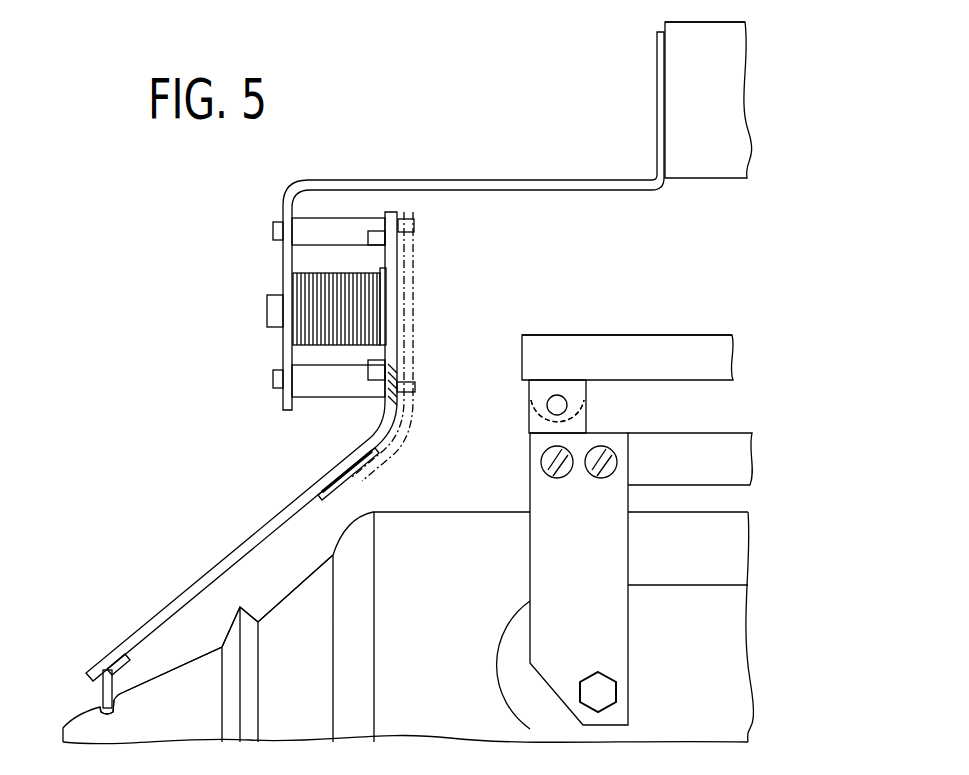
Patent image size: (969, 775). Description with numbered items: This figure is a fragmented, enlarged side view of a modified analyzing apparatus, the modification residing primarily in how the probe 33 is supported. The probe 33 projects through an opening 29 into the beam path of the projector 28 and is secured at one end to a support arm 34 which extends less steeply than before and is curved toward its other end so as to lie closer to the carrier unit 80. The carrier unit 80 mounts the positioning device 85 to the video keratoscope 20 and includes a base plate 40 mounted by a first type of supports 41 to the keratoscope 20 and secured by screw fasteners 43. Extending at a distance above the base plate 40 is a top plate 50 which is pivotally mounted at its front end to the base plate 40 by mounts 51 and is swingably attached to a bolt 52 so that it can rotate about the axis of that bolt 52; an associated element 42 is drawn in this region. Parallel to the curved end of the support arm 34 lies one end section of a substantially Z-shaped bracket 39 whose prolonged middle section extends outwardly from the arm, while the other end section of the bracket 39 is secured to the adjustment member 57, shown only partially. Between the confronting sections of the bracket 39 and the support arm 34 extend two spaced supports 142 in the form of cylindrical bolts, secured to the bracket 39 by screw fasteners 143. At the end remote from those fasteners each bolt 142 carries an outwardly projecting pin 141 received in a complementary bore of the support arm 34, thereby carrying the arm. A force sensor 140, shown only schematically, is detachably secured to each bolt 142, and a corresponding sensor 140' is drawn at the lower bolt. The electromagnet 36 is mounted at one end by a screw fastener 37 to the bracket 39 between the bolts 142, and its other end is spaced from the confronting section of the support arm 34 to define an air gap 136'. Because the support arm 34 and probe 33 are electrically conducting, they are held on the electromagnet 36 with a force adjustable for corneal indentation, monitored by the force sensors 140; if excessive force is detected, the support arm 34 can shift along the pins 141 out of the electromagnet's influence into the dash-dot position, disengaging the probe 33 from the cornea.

The video keratoscope 20 is at (758, 676).
The projector 28 is at (190, 680).
The opening 29 is at (100, 707).
The probe 33 is at (113, 686).
The support arm 34 is at (356, 476).
The electromagnet 36 is at (320, 325).
The screw fastener 37 is at (273, 312).
The bracket 39 is at (465, 185).
The base plate 40 is at (728, 452).
The first type of supports 41 is at (595, 612).
The pivot block 42 is at (577, 400).
The screw fasteners 43 is at (600, 470).
The top plate 50 is at (708, 357).
The mounts 51 is at (571, 396).
The bolt 52 is at (555, 400).
The adjustment member 57 is at (725, 117).
The carrier unit 80 is at (757, 312).
The positioning device 85 is at (758, 68).
The air gap 136' is at (434, 295).
The force sensor 140 is at (380, 190).
The lower stop block 140' is at (428, 356).
The pin 141 is at (415, 226).
The supports 142 is at (322, 232).
The screw fasteners 143 is at (273, 231).